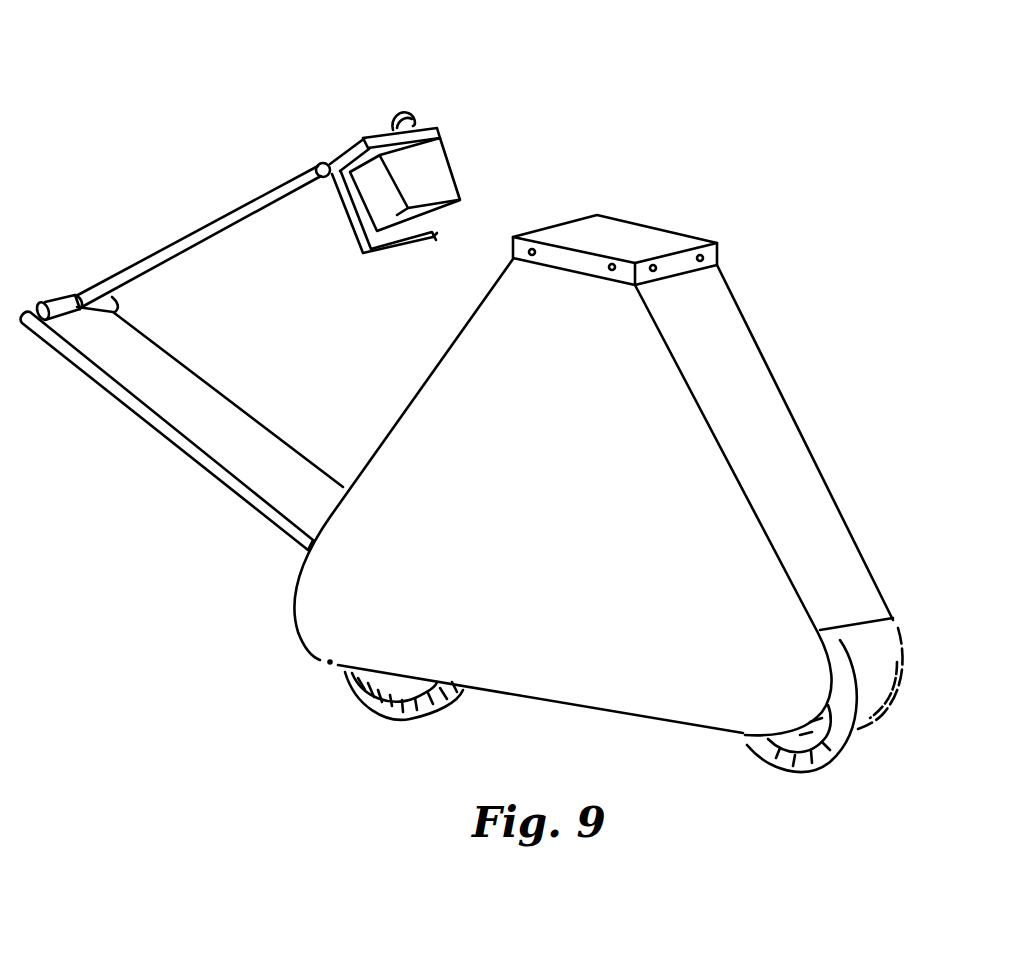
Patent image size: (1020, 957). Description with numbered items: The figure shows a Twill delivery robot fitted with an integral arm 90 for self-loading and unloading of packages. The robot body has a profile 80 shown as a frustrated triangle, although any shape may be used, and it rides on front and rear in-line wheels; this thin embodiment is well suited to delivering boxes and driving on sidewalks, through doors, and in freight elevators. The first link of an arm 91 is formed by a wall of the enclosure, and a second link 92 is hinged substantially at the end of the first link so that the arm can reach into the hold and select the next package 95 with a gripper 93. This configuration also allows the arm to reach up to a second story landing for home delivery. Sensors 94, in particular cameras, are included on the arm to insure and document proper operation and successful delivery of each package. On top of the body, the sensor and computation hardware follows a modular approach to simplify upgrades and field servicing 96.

The profile 80 is at (595, 595).
The integral arm 90 is at (188, 96).
The first link of an arm 91 is at (230, 487).
The second link 92 is at (213, 220).
The gripper 93 is at (360, 247).
The sensors 94 is at (397, 114).
The package 95 is at (447, 163).
The modular sensor and computation hardware 96 is at (653, 227).